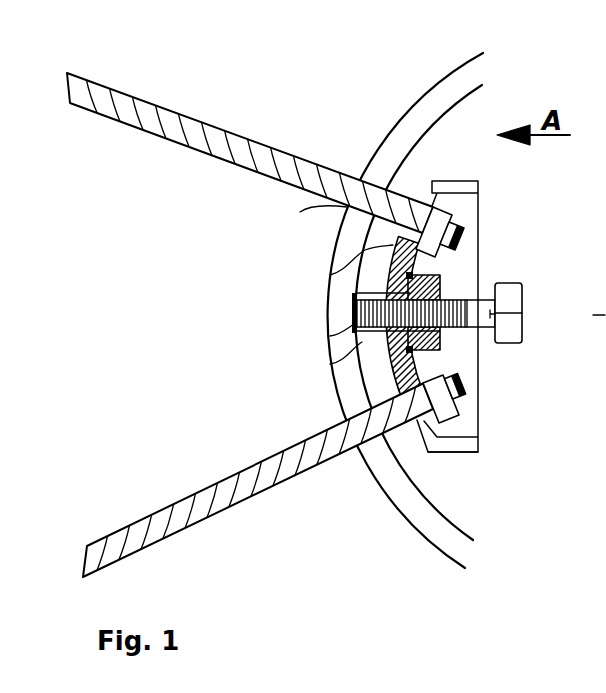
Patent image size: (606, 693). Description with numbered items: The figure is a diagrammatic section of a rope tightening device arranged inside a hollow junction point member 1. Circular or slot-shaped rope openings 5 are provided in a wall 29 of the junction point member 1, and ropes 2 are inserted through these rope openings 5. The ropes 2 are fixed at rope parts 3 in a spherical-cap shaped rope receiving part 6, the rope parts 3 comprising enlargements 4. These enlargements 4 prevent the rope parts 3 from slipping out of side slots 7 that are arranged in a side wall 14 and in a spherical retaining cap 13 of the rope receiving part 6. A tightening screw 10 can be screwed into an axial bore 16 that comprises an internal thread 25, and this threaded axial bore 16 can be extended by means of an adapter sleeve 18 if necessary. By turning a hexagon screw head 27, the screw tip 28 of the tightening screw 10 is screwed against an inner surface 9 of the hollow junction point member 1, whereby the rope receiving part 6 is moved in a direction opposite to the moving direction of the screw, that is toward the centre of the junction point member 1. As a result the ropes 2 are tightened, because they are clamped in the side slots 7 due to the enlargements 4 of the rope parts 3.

The hollow junction point member 1 is at (444, 287).
The ropes 2 is at (112, 118).
The rope parts 3 is at (460, 230).
The enlargements 4 is at (462, 226).
The rope openings 5 is at (300, 212).
The spherical-cap shaped rope receiving part 6 is at (463, 366).
The side slots 7 is at (428, 197).
The inner surface 9 is at (453, 107).
The tightening screw 10 is at (484, 298).
The spherical retaining cap 13 is at (330, 275).
The side wall 14 is at (453, 455).
The axial bore 16 is at (408, 313).
The adapter sleeve 18 is at (445, 277).
The internal thread 25 is at (330, 364).
The hexagon screw head 27 is at (504, 322).
The screw tip 28 is at (330, 336).
The wall 29 is at (462, 80).